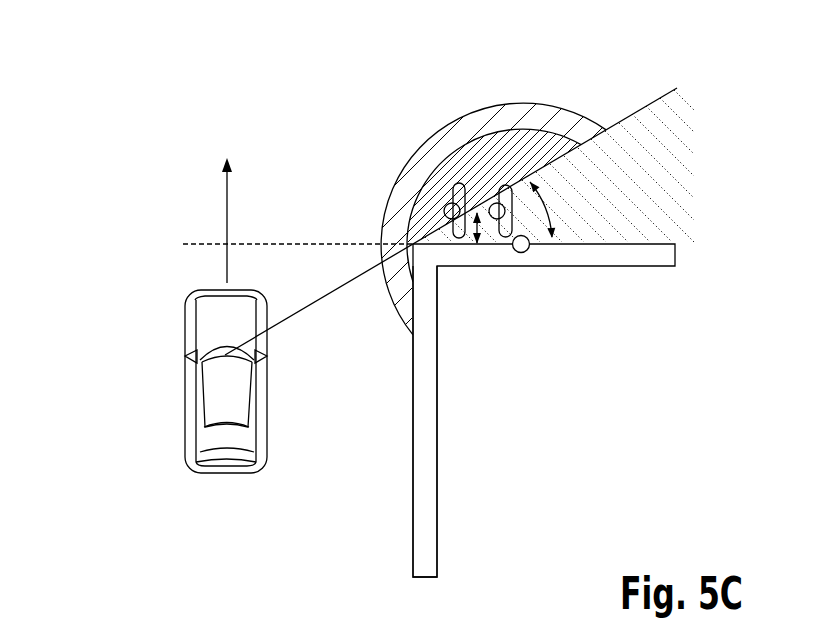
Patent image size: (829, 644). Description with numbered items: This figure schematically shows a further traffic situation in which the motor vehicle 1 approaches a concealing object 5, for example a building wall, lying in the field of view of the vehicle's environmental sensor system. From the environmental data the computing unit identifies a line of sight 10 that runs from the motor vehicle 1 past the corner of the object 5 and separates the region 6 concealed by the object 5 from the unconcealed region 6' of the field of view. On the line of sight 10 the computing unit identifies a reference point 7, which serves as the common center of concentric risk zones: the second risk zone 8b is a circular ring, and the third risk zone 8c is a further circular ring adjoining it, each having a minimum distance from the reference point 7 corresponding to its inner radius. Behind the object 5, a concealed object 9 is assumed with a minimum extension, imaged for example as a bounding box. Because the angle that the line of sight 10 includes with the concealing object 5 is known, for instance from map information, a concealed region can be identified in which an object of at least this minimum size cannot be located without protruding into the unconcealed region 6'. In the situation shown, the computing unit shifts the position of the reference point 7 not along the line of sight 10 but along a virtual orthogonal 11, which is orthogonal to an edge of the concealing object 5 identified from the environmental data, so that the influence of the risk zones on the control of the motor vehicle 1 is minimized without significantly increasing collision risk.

The motor vehicle 1 is at (152, 396).
The object 5 is at (428, 415).
The concealed region 6 is at (559, 149).
The unconcealed region 6' is at (337, 90).
The reference point 7 is at (522, 254).
The second risk zone 8b is at (490, 134).
The third risk zone 8c is at (438, 140).
The concealed object 9 is at (506, 237).
The line of sight 10 is at (660, 98).
The virtual orthogonal 11 is at (655, 244).